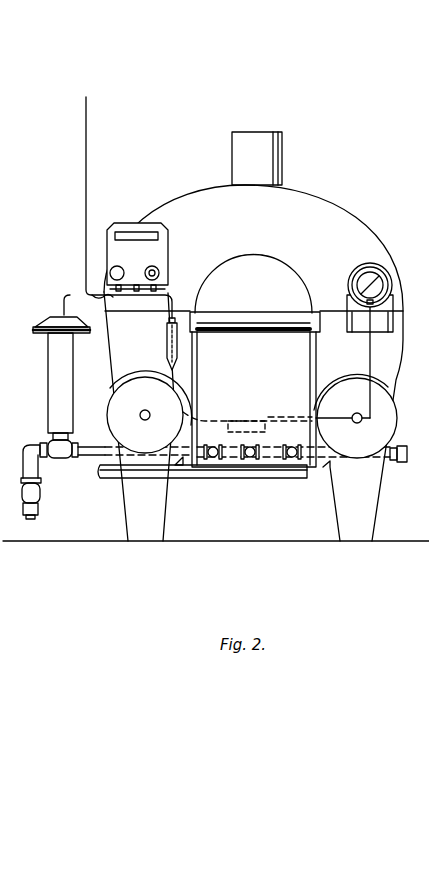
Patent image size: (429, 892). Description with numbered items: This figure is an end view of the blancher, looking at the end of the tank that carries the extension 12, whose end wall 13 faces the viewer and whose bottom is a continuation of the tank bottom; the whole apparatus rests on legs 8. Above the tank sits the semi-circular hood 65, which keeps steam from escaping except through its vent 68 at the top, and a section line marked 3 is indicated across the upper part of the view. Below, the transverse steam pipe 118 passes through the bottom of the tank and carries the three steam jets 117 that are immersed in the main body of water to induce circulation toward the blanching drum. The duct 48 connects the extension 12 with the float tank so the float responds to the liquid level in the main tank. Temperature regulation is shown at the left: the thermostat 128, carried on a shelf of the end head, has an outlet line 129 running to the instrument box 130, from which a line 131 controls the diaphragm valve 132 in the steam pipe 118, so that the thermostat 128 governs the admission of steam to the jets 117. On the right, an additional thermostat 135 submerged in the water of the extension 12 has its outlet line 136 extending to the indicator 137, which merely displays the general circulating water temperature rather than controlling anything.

The section line 3- 3 is at (258, 143).
The legs 8 is at (157, 523).
The extension 12 is at (277, 352).
The end wall 13 is at (255, 389).
The duct 48 is at (193, 481).
The hood 65 is at (322, 197).
The vent 68 is at (285, 142).
The steam jets 117 is at (222, 437).
The steam pipe 118 is at (80, 458).
The thermostat 128 is at (243, 418).
The outlet line 129 is at (163, 318).
The instrument box 130 is at (139, 224).
The line 131 is at (65, 290).
The diaphragm valve 132 is at (45, 333).
The additional thermostat 135 is at (290, 417).
The outlet line 136 is at (372, 351).
The indicator 137 is at (363, 264).